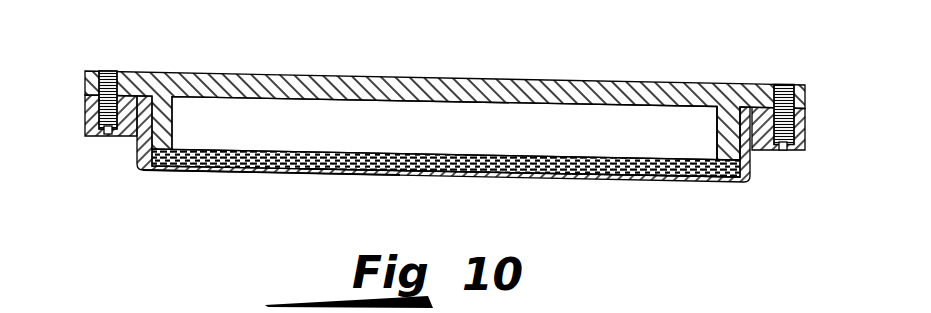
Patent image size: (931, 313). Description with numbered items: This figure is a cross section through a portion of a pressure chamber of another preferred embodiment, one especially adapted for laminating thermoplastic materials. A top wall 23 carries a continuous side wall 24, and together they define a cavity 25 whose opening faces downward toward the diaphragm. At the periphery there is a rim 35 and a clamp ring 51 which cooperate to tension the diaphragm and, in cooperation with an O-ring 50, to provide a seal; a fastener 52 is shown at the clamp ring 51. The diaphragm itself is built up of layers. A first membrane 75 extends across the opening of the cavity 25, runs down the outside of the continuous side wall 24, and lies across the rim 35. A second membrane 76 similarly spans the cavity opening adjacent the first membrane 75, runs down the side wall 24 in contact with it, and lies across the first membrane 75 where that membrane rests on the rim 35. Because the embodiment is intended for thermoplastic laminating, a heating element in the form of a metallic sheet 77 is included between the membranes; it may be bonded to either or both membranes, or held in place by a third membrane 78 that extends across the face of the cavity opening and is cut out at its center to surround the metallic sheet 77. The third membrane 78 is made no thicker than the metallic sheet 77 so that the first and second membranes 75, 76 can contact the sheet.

The top wall 23 is at (588, 79).
The continuous side wall 24 is at (718, 128).
The cavity 25 is at (572, 143).
The rim 35 is at (806, 100).
The O-ring 50 is at (158, 147).
The clamp ring 51 is at (85, 118).
The screw 52 is at (104, 134).
The first membrane 75 is at (391, 156).
The second membrane 76 is at (395, 176).
The metallic sheet 77 is at (577, 180).
The third membrane 78 is at (202, 172).